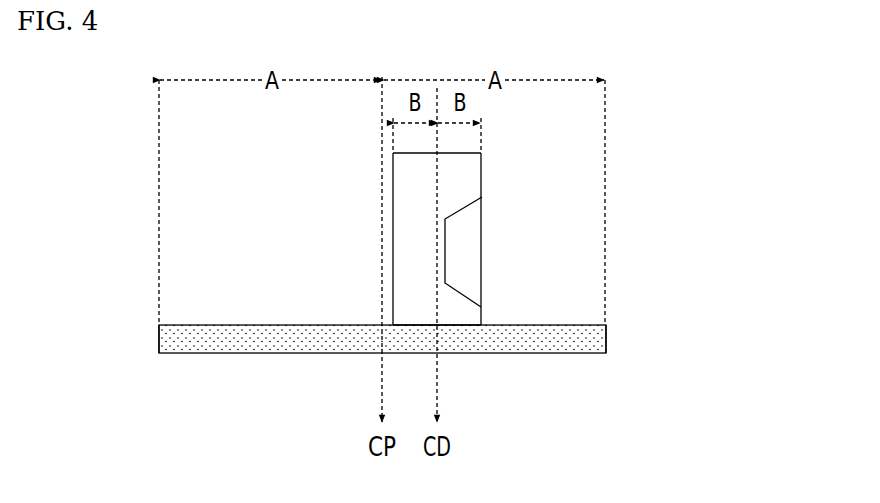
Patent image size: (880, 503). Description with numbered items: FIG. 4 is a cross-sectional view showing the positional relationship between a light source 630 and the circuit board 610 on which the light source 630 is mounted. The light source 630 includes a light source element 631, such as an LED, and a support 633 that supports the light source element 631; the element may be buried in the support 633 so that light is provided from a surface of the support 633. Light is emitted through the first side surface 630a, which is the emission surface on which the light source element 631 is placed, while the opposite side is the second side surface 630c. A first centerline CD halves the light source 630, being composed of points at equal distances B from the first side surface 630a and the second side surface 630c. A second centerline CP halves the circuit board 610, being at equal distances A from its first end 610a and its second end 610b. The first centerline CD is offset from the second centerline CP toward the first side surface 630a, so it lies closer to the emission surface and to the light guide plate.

The circuit board 610 is at (385, 350).
The first end of the circuit board 610a is at (613, 320).
The second end of the circuit board 610b is at (150, 319).
The light source 630 is at (390, 238).
The first side surface 630a is at (482, 212).
The second side surface 630c is at (392, 193).
The light source element 631 is at (459, 250).
The support 633 is at (415, 283).